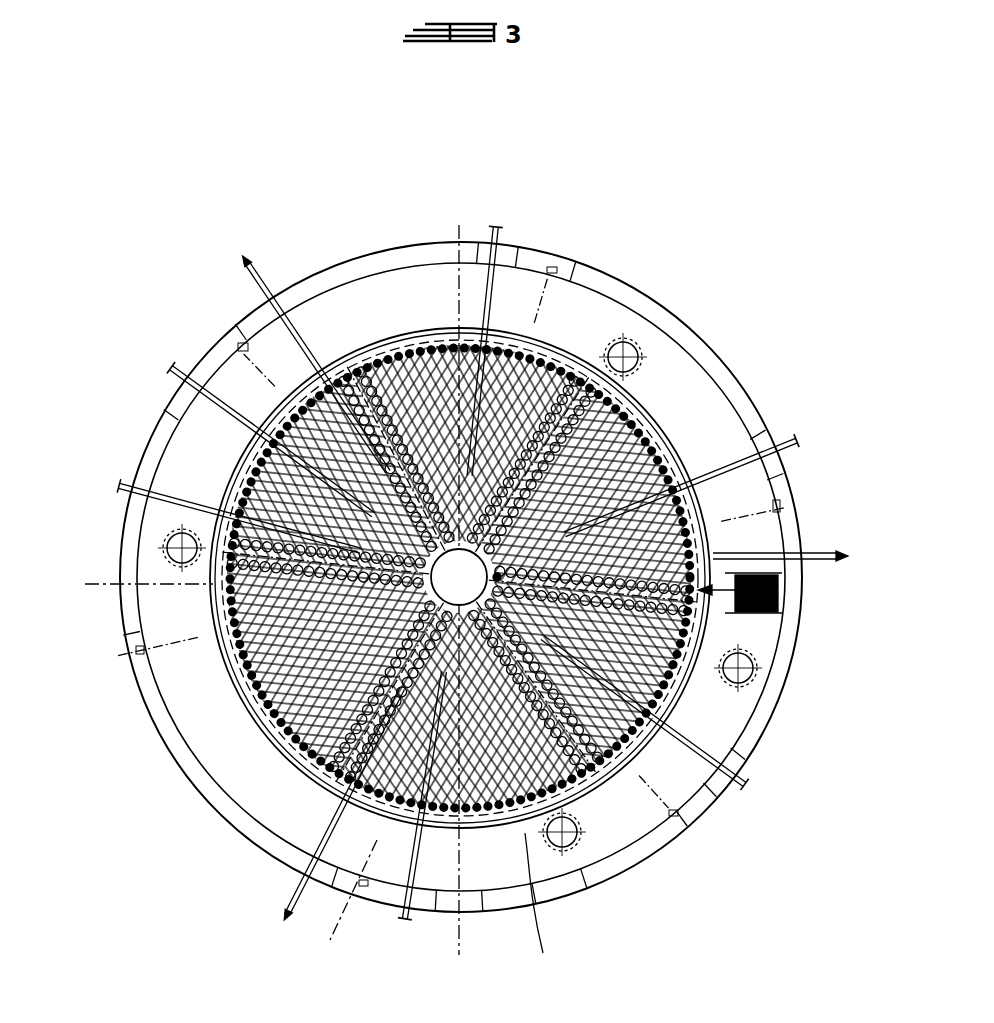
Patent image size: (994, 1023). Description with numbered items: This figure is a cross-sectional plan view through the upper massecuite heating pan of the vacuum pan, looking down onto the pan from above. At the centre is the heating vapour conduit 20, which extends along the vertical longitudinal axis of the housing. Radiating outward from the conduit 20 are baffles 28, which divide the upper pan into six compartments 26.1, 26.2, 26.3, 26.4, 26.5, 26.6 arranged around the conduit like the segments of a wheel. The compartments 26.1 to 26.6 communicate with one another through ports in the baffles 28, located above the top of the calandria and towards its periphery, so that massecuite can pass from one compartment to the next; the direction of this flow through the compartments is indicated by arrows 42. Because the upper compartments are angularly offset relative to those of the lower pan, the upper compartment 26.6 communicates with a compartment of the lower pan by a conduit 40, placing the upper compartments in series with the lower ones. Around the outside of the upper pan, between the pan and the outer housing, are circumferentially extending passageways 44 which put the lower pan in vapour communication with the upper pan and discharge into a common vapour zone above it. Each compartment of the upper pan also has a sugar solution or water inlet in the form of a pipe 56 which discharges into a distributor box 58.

The heating vapour conduit 20 is at (466, 577).
The compartment 26.1 is at (760, 717).
The compartment 26.2 is at (533, 868).
The compartment 26.3 is at (230, 767).
The compartment 26.4 is at (177, 457).
The compartment 26.5 is at (427, 277).
The compartment 26.6 is at (703, 420).
The baffle 28 is at (360, 378).
The conduit 40 is at (778, 598).
The arrows 42 is at (757, 667).
The circumferentially extending passageway 44 is at (380, 262).
The pipe 56 is at (410, 925).
The distributor box 58 is at (343, 910).